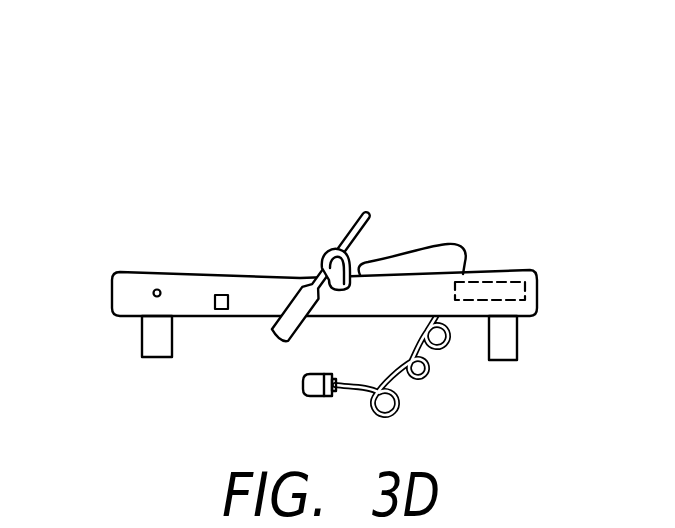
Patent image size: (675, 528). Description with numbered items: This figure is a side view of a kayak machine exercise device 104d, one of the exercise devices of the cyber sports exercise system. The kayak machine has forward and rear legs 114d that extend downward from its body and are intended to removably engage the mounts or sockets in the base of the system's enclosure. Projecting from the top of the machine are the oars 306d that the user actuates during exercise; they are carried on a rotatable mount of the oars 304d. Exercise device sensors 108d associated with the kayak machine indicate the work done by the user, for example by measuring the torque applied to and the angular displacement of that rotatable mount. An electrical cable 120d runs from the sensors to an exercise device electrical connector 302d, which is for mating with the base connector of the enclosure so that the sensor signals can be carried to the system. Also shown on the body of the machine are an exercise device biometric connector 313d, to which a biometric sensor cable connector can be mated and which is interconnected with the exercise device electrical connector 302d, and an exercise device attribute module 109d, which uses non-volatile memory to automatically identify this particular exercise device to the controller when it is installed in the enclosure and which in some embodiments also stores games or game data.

The kayak machine exercise device 104d is at (178, 194).
The exercise device biometric connector 313d is at (153, 293).
The exercise device attribute module 109d is at (228, 298).
The rotatable mount of the oars 304d is at (327, 253).
The oars 306d is at (368, 222).
The exercise device sensors 108d is at (512, 282).
The forward and rear legs 114d is at (142, 342).
The exercise device electrical connector 302d is at (303, 388).
The electrical cable 120d is at (438, 373).